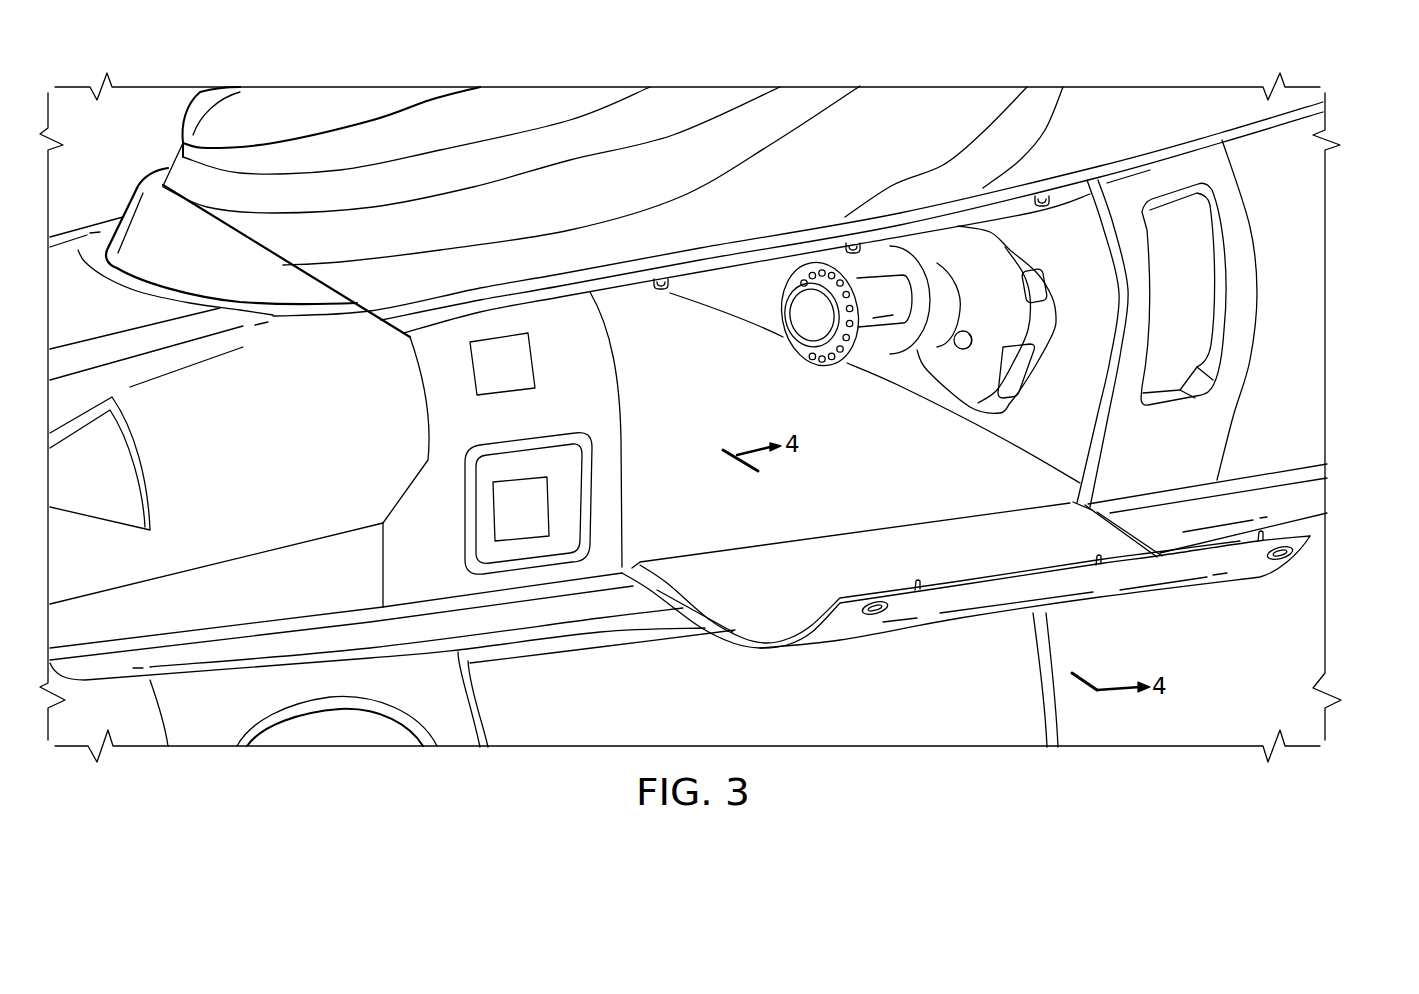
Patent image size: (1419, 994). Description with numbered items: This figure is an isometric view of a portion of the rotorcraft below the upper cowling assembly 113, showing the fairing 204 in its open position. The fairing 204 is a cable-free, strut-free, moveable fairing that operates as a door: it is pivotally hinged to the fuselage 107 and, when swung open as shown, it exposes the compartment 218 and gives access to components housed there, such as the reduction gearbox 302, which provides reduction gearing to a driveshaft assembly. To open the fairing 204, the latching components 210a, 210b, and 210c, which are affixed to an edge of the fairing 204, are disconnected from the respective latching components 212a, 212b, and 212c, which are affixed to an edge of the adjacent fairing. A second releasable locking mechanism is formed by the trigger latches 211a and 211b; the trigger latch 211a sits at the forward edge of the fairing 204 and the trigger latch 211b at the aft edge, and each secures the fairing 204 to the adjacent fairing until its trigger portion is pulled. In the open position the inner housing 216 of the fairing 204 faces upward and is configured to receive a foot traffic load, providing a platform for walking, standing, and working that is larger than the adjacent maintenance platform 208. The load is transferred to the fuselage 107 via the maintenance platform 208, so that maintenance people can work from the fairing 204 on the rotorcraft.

The fuselage 107 is at (1325, 643).
The upper cowling assembly 113 is at (151, 156).
The fairing 204 is at (742, 651).
The maintenance platform 208 is at (1300, 503).
The latching component 210a is at (920, 596).
The latching component 210b is at (1100, 568).
The latching component 210c is at (1260, 542).
The trigger latch 211a is at (873, 615).
The trigger latch 211b is at (1275, 559).
The latching component 212a is at (660, 280).
The latching component 212b is at (852, 244).
The latching component 212c is at (1042, 197).
The inner housing 216 is at (935, 555).
The compartment 218 is at (1077, 438).
The reduction gearbox 302 is at (950, 387).